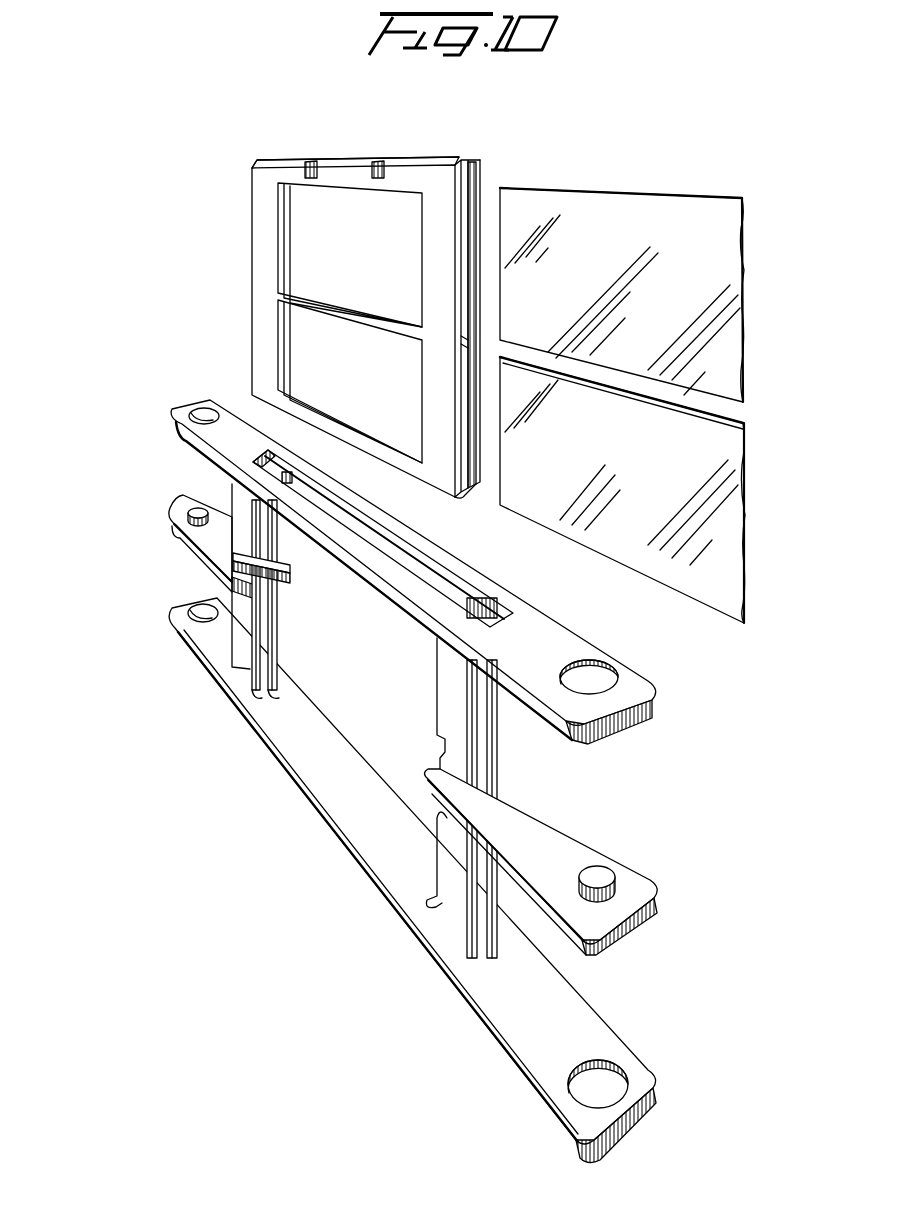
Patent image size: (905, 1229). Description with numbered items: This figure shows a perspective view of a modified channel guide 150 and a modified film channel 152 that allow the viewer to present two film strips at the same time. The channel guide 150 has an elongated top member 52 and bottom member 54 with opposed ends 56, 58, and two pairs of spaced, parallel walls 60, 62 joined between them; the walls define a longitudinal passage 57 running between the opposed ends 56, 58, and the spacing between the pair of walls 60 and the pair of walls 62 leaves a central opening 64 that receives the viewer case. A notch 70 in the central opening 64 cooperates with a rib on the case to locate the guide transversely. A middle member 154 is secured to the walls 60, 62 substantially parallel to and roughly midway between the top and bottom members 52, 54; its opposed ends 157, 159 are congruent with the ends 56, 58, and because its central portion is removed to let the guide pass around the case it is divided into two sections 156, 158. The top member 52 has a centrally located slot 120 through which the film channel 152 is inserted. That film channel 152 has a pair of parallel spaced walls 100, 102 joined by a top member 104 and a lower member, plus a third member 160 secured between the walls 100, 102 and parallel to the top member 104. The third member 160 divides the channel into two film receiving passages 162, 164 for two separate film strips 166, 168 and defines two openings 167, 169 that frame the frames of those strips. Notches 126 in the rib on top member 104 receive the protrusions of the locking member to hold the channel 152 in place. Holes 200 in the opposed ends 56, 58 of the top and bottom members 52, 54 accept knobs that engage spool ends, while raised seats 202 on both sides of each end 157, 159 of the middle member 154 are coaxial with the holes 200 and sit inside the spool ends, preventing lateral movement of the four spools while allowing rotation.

The top member 52 is at (247, 446).
The bottom member 54 is at (553, 1117).
The opposed end 56 is at (200, 403).
The longitudinal passage 57 is at (258, 596).
The opposed end 58 is at (633, 718).
The pair of spaced parallel walls 60 is at (225, 558).
The pair of spaced parallel walls 62 is at (453, 910).
The central opening 64 is at (362, 712).
The notch 70 is at (455, 748).
The wall 100 is at (432, 230).
The wall 102 is at (480, 194).
The top member 104 is at (450, 165).
The slot 120 is at (377, 540).
The notches 126 is at (378, 162).
The channel guide 150 is at (404, 1024).
The film channel 152 is at (222, 276).
The middle member 154 is at (633, 867).
The section 156 is at (537, 832).
The opposed end 157 is at (247, 540).
The section 158 is at (235, 578).
The opposed end 159 is at (628, 930).
The third member 160 is at (384, 324).
The film receiving passage 162 is at (480, 237).
The film receiving passage 164 is at (467, 443).
The film strip 166 is at (718, 267).
The opening 167 is at (333, 222).
The film strip 168 is at (718, 514).
The opening 169 is at (310, 342).
The holes 200 is at (190, 415).
The raised seats 202 is at (188, 513).